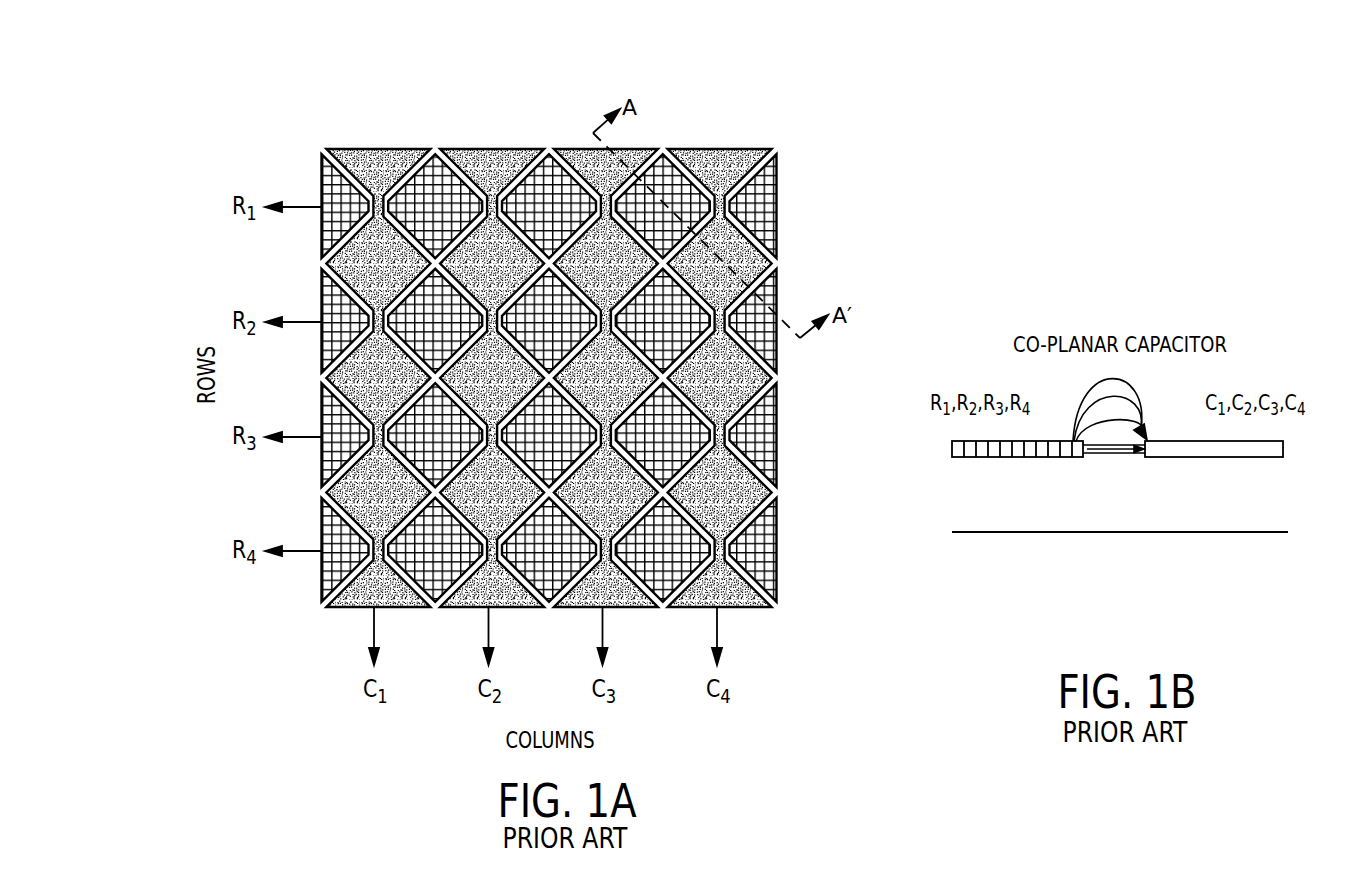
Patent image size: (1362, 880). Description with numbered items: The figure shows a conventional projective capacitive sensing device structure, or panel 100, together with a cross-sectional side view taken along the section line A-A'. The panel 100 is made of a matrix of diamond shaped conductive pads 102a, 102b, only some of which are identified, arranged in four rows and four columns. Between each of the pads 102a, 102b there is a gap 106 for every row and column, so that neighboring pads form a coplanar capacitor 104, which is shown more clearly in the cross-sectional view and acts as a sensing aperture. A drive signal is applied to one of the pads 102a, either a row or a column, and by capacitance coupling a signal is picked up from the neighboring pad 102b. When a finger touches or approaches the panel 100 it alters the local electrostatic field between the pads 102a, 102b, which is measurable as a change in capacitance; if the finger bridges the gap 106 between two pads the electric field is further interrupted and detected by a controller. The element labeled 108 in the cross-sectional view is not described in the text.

In FIG. 1A, the projective capacitive sensing device structure 100 is at (632, 330).
In FIG. 1A, the diamond shaped conductive pad 102a is at (582, 165).
In FIG. 1B, the diamond shaped conductive pad 102a is at (974, 460).
In FIG. 1A, the diamond shaped conductive pad 102b is at (657, 158).
In FIG. 1B, the diamond shaped conductive pad 102b is at (1228, 463).
In FIG. 1B, the coplanar capacitor 104 is at (1218, 559).
In FIG. 1A, the gap 106 is at (771, 160).
In FIG. 1B, the bridge between electrodes 108 is at (1128, 510).